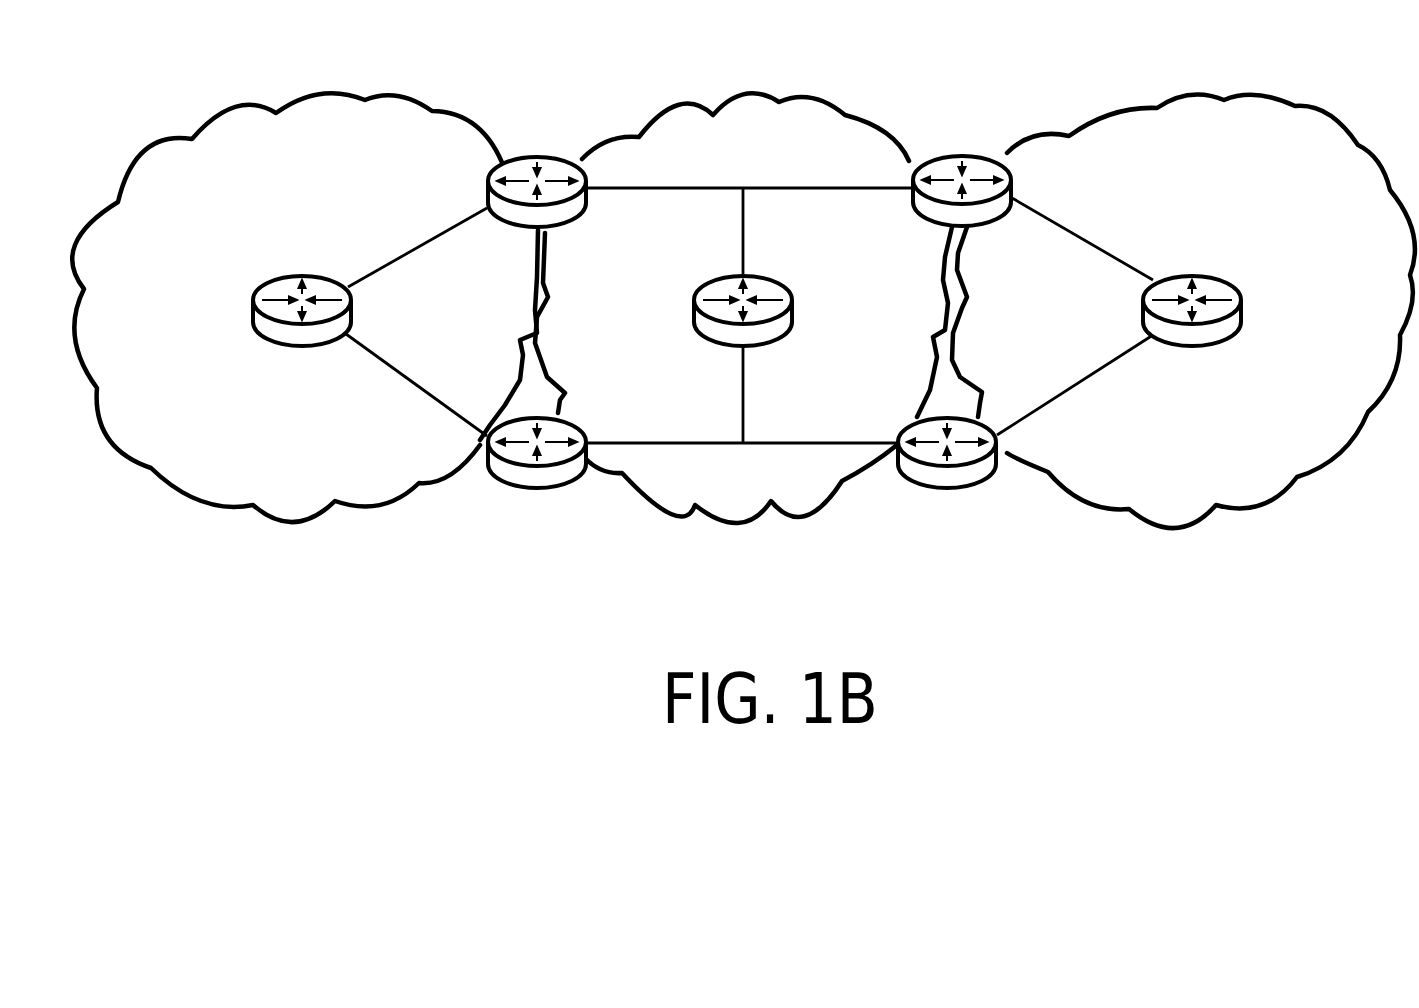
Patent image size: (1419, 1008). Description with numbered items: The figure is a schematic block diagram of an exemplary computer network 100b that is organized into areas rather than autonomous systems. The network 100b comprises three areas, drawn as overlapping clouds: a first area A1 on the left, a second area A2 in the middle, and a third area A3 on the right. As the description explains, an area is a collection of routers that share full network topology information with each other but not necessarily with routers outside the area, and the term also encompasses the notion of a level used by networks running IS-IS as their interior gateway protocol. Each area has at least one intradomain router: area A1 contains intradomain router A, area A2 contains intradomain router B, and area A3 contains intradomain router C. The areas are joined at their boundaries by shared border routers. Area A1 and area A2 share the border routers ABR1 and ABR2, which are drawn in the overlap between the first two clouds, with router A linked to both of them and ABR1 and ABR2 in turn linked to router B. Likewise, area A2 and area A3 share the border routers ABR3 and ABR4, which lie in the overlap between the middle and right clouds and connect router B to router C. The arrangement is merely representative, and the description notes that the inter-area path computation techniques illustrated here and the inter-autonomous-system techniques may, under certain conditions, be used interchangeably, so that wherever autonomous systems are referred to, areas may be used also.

The computer network 100b is at (743, 424).
The area A1 is at (305, 307).
The area A2 is at (758, 308).
The area A3 is at (1166, 311).
The intradomain router A is at (273, 322).
The intradomain router B is at (771, 310).
The intradomain router C is at (1217, 310).
The border router ABR1 is at (551, 150).
The border router ABR2 is at (508, 489).
The border router ABR3 is at (988, 148).
The border router ABR4 is at (959, 489).